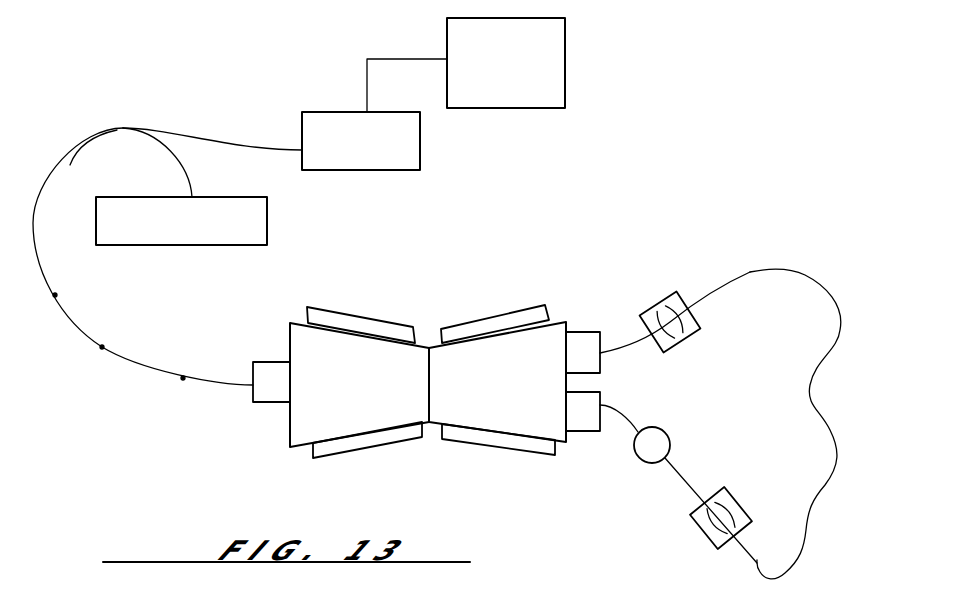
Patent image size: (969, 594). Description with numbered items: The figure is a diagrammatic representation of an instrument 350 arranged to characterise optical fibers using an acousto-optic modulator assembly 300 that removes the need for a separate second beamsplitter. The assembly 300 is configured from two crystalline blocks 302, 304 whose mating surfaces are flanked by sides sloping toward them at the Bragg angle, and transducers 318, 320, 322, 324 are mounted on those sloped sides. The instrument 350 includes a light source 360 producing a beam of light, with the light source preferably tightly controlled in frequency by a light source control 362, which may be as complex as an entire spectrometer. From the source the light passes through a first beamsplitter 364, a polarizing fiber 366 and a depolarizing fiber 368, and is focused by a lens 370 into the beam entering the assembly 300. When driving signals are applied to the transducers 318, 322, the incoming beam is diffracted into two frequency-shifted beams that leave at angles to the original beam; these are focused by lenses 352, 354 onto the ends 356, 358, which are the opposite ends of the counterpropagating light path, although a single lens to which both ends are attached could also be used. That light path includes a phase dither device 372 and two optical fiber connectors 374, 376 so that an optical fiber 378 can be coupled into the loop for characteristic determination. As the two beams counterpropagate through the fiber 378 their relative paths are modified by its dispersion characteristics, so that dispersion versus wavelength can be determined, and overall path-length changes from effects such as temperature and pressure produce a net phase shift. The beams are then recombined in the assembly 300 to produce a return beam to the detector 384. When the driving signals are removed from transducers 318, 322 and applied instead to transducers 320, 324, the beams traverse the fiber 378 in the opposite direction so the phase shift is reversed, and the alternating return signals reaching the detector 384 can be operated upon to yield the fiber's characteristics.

The acousto-optic modulator assembly 300 is at (432, 327).
The crystalline block 302 is at (295, 440).
The crystalline block 304 is at (558, 443).
The transducer 318 is at (367, 317).
The transducer 320 is at (373, 450).
The transducer 322 is at (483, 321).
The transducer 324 is at (478, 447).
The instrument 350 is at (537, 295).
The lens 352 is at (580, 332).
The lens 354 is at (585, 432).
The end of light path 356 is at (601, 353).
The end of light path 358 is at (603, 403).
The light source 360 is at (420, 152).
The light source control 362 is at (565, 45).
The first beamsplitter 364 is at (111, 128).
The polarizing fiber 366 is at (72, 318).
The depolarizing fiber 368 is at (153, 372).
The lens 370 is at (273, 362).
The phase dither device 372 is at (670, 437).
The optical fiber connector 374 is at (685, 297).
The optical fiber connector 376 is at (705, 535).
The optical fiber 378 is at (808, 400).
The detector 384 is at (267, 227).